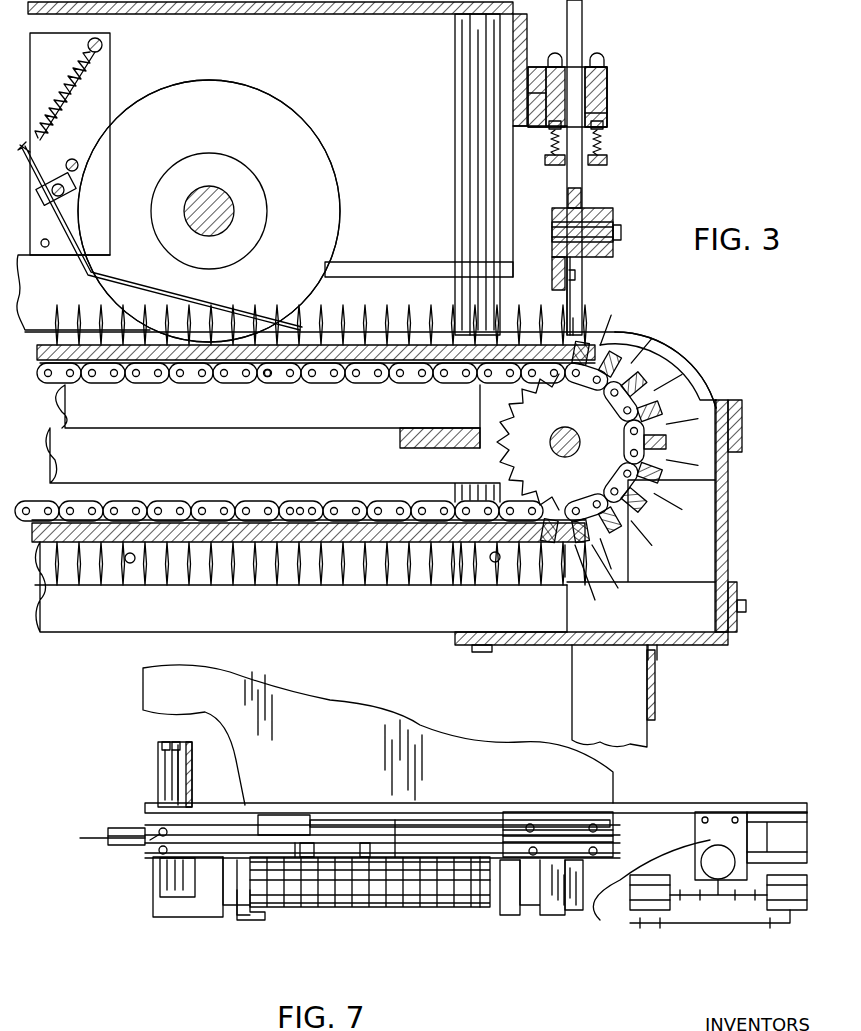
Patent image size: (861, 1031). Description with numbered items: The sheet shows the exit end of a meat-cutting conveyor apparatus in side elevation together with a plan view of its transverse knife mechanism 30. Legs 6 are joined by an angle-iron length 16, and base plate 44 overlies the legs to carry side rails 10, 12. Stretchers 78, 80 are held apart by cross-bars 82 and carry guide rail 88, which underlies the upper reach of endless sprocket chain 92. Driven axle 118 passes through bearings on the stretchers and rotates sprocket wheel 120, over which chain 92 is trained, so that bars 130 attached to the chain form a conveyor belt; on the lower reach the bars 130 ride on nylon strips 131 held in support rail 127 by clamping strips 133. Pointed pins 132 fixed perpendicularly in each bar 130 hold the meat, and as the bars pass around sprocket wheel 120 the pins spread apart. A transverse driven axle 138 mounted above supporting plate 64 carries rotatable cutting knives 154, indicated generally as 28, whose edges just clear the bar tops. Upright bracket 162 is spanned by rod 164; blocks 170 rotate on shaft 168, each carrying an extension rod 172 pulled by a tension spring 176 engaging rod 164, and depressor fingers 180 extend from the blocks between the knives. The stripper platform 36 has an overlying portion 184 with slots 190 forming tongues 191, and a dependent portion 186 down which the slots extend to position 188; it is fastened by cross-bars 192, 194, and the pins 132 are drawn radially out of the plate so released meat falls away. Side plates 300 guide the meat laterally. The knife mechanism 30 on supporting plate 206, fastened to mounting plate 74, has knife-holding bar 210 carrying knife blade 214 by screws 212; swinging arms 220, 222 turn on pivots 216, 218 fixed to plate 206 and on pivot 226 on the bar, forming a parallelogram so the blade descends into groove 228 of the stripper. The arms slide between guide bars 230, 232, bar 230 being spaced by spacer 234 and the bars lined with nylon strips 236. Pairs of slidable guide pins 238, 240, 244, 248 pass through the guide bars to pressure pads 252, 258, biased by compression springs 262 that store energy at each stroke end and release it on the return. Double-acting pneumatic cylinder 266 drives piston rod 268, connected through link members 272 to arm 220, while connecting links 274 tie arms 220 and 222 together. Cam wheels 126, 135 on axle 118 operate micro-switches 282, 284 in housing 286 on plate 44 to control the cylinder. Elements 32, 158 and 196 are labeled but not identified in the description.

In FIG. 3, the leg 6 is at (625, 734).
In FIG. 7, the side rail 10 is at (225, 877).
In FIG. 3, the side rail 12 is at (725, 558).
In FIG. 7, the side rail 12 is at (550, 880).
In FIG. 3, the angle-iron length 16 is at (655, 683).
In FIG. 3, the cutting knives 28 is at (236, 80).
In FIG. 3, the transverse knife mechanism 30 is at (655, 191).
In FIG. 7, the valve assembly 32 is at (688, 931).
In FIG. 3, the stripper and meat-releasing platform 36 is at (679, 331).
In FIG. 7, the stripper and meat-releasing platform 36 is at (445, 908).
In FIG. 3, the base plate 44 is at (527, 648).
In FIG. 7, the base plate 44 is at (165, 905).
In FIG. 3, the supporting plate 64 is at (385, 275).
In FIG. 7, the mounting plate 74 is at (350, 720).
In FIG. 7, the stretcher 78 is at (242, 878).
In FIG. 3, the stretcher 80 is at (270, 479).
In FIG. 7, the stretcher 80 is at (535, 880).
In FIG. 3, the cross-bar 82 is at (400, 440).
In FIG. 3, the guide rail 88 is at (340, 415).
In FIG. 3, the sprocket chain 92 is at (248, 380).
In FIG. 3, the axle 118 is at (570, 428).
In FIG. 3, the sprocket wheel 120 is at (500, 462).
In FIG. 7, the cam wheel 126 is at (162, 795).
In FIG. 3, the support rail 127 is at (416, 613).
In FIG. 3, the bar 130 is at (267, 385).
In FIG. 3, the strip 131 is at (460, 560).
In FIG. 3, the meat holding pointed pin 132 is at (384, 328).
In FIG. 3, the clamping strip 133 is at (240, 560).
In FIG. 7, the cam wheel 135 is at (180, 748).
In FIG. 3, the transverse driven axle 138 is at (222, 207).
In FIG. 3, the cutting knife 154 is at (321, 198).
In FIG. 3, the wheel web 158 is at (250, 214).
In FIG. 3, the upright bracket 162 is at (92, 83).
In FIG. 3, the rod 164 is at (102, 46).
In FIG. 3, the shaft 168 is at (64, 188).
In FIG. 3, the block 170 is at (50, 200).
In FIG. 3, the extension rod 172 is at (30, 148).
In FIG. 3, the tension spring 176 is at (62, 108).
In FIG. 3, the depressor finger 180 is at (72, 238).
In FIG. 3, the overlying portion 184 is at (367, 328).
In FIG. 3, the dependent portion 186 is at (722, 506).
In FIG. 3, the slot end position 188 is at (720, 400).
In FIG. 3, the slot 190 is at (668, 350).
In FIG. 7, the slot 190 is at (340, 882).
In FIG. 3, the tongue 191 is at (320, 330).
In FIG. 3, the cross-bar 192 is at (740, 418).
In FIG. 7, the cross-bar 192 is at (250, 920).
In FIG. 3, the cross-bar 194 is at (746, 608).
In FIG. 3, the pin tip 196 is at (617, 544).
In FIG. 7, the supporting plate 206 is at (652, 805).
In FIG. 3, the knife-holding bar 210 is at (556, 264).
In FIG. 7, the knife-holding bar 210 is at (116, 833).
In FIG. 3, the screw 212 is at (578, 274).
In FIG. 3, the knife blade 214 is at (568, 314).
In FIG. 7, the knife blade 214 is at (108, 838).
In FIG. 7, the pivot 216 is at (296, 855).
In FIG. 7, the pivot 218 is at (480, 880).
In FIG. 7, the swinging arm 220 is at (265, 840).
In FIG. 3, the swinging arm 222 is at (575, 38).
In FIG. 7, the swinging arm 222 is at (416, 840).
In FIG. 3, the pivot 226 is at (590, 210).
In FIG. 3, the groove 228 is at (575, 328).
In FIG. 3, the guide bar 230 is at (560, 96).
In FIG. 7, the guide bar 230 is at (157, 830).
In FIG. 3, the guide bar 232 is at (598, 112).
In FIG. 7, the guide bar 232 is at (574, 872).
In FIG. 3, the spacer 234 is at (535, 95).
In FIG. 3, the strip 236 is at (605, 100).
In FIG. 7, the slidable guide pins 238 is at (165, 852).
In FIG. 3, the slidable guide pins 240 is at (598, 58).
In FIG. 7, the slidable guide pins 244 is at (160, 841).
In FIG. 7, the slidable guide pins 248 is at (528, 828).
In FIG. 3, the pressure pad 252 is at (608, 162).
In FIG. 3, the pressure pad 258 is at (545, 173).
In FIG. 3, the compression spring 262 is at (548, 140).
In FIG. 7, the pneumatic cylinder 266 is at (763, 830).
In FIG. 7, the piston rod 268 is at (558, 840).
In FIG. 7, the link member 272 is at (348, 825).
In FIG. 7, the connecting link 274 is at (400, 830).
In FIG. 7, the micro-switch 282 is at (160, 775).
In FIG. 7, the micro-switch 284 is at (172, 745).
In FIG. 7, the housing 286 is at (160, 760).
In FIG. 3, the side plate 300 is at (62, 303).